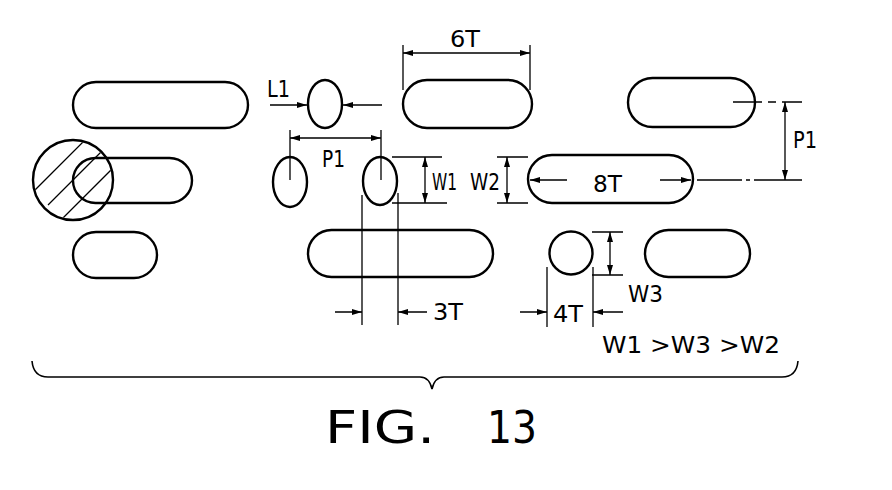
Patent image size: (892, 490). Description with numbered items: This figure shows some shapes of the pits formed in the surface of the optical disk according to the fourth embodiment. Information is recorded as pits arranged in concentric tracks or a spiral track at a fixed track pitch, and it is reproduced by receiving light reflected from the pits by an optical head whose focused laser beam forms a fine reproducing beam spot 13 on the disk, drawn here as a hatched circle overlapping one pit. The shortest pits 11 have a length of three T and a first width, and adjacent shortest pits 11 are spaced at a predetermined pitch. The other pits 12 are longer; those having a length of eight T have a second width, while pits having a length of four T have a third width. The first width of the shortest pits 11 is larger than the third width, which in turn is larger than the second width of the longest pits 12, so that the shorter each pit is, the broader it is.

The shortest pit 11 is at (326, 81).
The pit 12 is at (510, 105).
The reproducing beam spot 13 is at (45, 200).